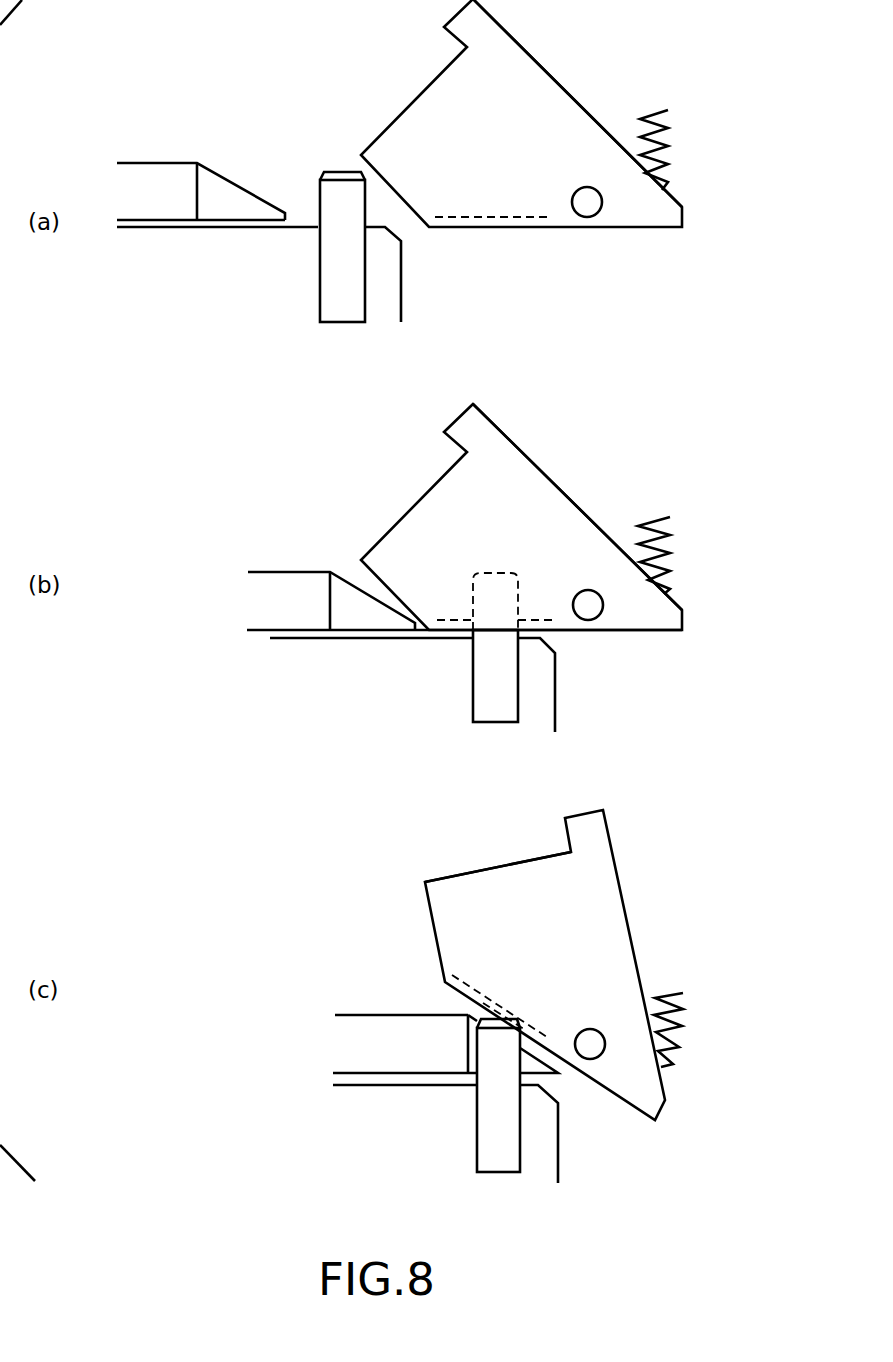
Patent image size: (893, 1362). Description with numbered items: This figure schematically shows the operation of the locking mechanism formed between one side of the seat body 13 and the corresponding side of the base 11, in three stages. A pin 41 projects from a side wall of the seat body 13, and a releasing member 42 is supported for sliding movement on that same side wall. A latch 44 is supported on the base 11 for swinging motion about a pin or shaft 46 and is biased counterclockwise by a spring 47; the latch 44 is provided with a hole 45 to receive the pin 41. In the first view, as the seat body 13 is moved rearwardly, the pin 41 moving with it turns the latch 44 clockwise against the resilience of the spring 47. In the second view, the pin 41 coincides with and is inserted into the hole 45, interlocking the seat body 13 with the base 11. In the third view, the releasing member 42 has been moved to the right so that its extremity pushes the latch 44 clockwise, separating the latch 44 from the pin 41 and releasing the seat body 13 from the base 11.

The base 11 is at (647, 52).
The seat body 13 is at (390, 290).
The pin 41 is at (340, 172).
The releasing member 42 is at (178, 163).
The latch 44 is at (543, 83).
The hole 45 is at (517, 217).
The pin (shaft) 46 is at (590, 208).
The spring 47 is at (663, 140).